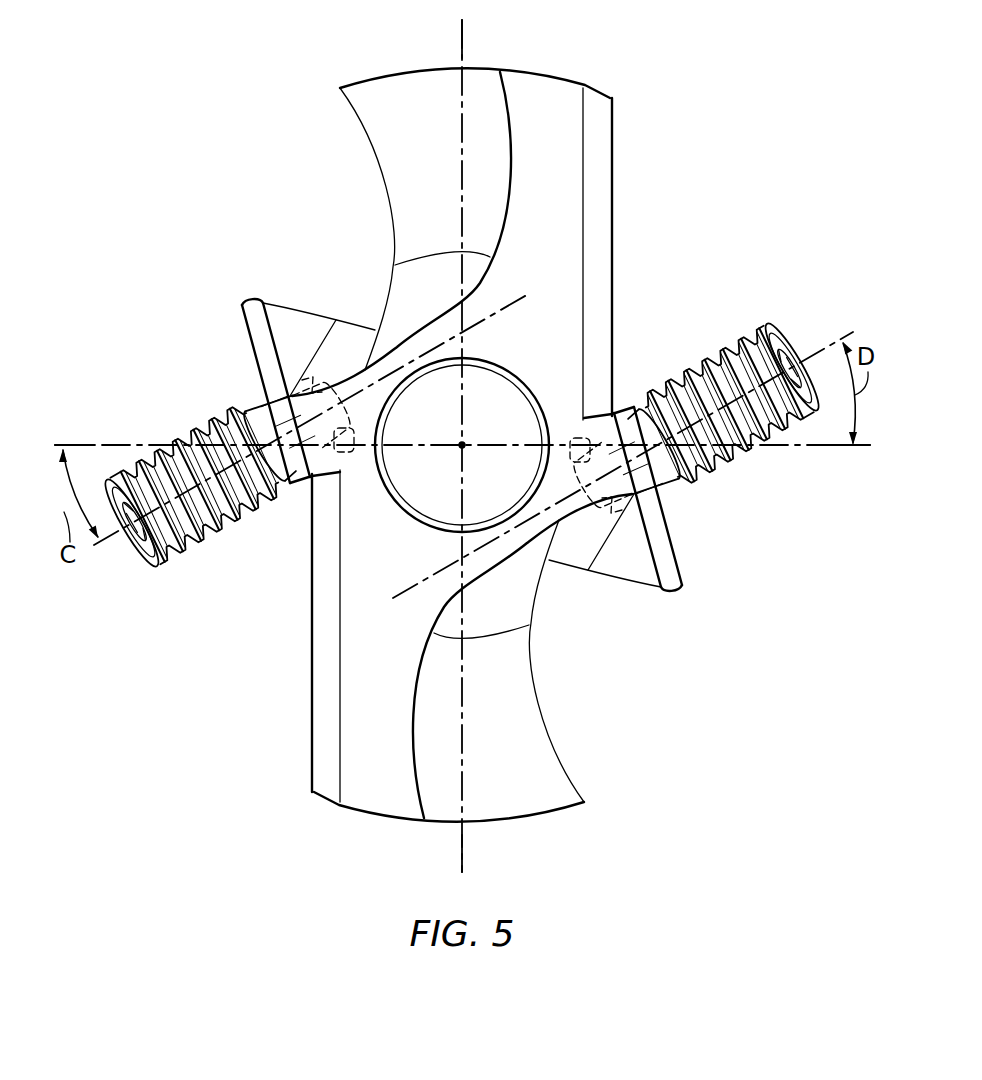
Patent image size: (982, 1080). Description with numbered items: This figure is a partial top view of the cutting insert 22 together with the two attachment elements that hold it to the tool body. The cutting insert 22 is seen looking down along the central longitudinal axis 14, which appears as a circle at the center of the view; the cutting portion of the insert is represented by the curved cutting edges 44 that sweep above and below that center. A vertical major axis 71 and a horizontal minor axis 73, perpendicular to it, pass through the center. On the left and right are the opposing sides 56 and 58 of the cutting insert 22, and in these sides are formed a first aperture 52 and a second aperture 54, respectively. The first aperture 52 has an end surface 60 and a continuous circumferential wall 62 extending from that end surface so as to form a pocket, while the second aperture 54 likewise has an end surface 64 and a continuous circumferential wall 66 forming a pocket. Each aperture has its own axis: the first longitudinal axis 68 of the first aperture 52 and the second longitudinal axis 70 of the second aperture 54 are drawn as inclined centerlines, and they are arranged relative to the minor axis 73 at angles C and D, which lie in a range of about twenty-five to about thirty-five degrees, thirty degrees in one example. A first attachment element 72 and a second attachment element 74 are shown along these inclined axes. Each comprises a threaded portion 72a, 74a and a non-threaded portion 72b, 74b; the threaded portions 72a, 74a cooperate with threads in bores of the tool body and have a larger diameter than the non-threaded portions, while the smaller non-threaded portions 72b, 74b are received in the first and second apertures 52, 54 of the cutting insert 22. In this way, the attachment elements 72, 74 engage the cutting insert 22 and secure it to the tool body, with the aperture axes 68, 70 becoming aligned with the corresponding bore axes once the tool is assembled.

The central longitudinal axis 14 is at (462, 448).
The cutting insert 22 is at (688, 128).
The cutting edge 44 is at (373, 165).
The first aperture 52 is at (342, 453).
The second aperture 54 is at (577, 430).
The side 56 is at (313, 640).
The side 58 is at (614, 208).
The end surface 60 is at (373, 449).
The continuous circumferential wall 62 is at (328, 382).
The end surface 64 is at (600, 500).
The continuous circumferential wall 66 is at (562, 461).
The first longitudinal axis 68 is at (463, 333).
The second longitudinal axis 70 is at (423, 574).
The major axis 71 is at (463, 44).
The first attachment element 72 is at (233, 489).
The threaded portion 72a is at (212, 519).
The non-threaded portion 72b is at (282, 436).
The minor axis 73 is at (843, 447).
The second attachment element 74 is at (708, 402).
The threaded portion 74a is at (730, 403).
The non-threaded portion 74b is at (640, 454).